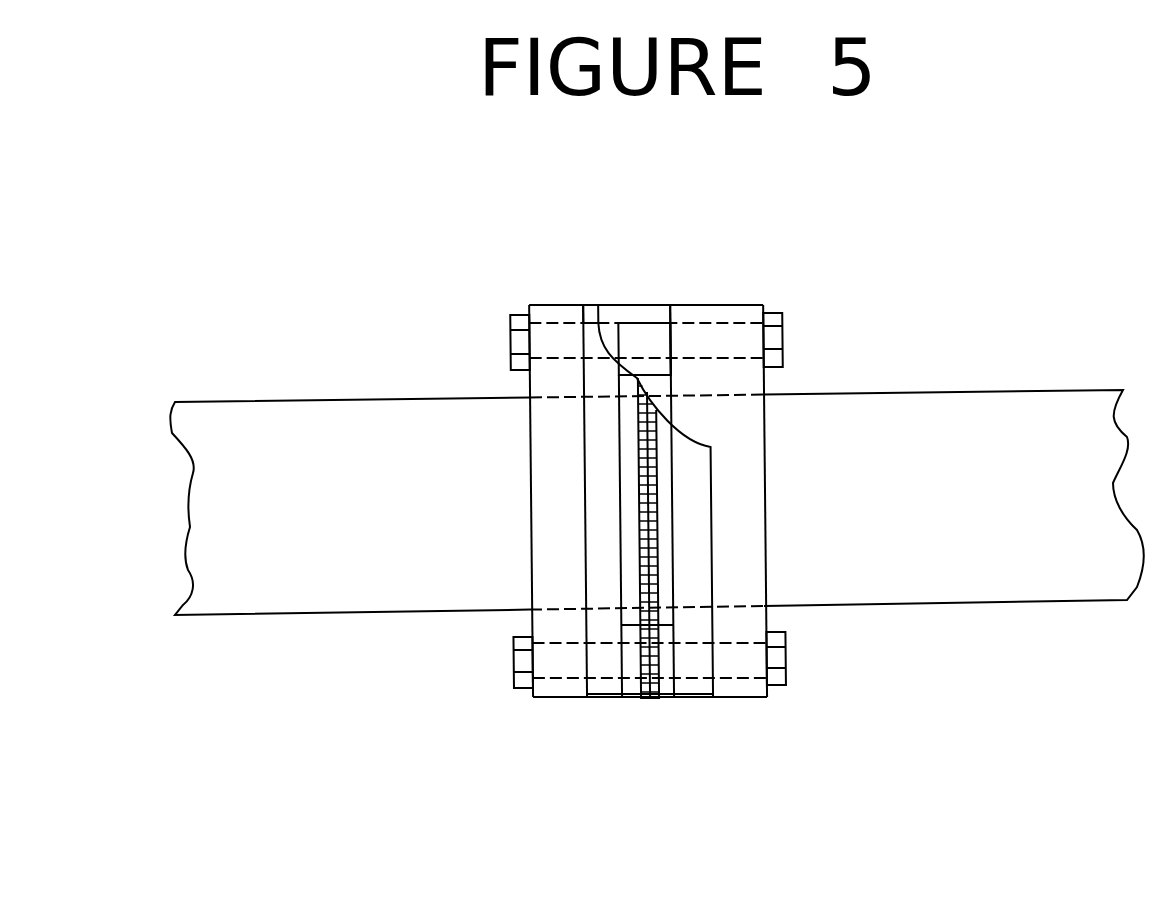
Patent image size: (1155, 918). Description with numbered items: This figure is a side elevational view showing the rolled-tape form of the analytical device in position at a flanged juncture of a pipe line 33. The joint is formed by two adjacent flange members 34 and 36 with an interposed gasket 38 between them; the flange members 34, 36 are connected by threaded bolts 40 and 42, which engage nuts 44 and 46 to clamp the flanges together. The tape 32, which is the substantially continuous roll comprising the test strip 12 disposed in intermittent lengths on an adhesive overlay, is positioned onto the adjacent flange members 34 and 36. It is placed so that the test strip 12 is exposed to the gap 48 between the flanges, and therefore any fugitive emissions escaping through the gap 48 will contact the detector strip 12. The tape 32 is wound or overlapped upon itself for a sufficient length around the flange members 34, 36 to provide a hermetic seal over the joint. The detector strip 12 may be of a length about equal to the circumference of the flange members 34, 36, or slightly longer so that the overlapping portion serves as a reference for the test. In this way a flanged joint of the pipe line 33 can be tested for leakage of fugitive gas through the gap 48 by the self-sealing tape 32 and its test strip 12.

The test strip 12 is at (643, 698).
The roll 32 is at (592, 305).
The pipe line 33 is at (342, 428).
The flange member 34 is at (556, 318).
The flange member 36 is at (748, 312).
The gasket 38 is at (663, 383).
The threaded bolt 40 is at (775, 340).
The threaded bolt 42 is at (777, 653).
The nut 44 is at (513, 360).
The nut 46 is at (525, 643).
The gap 48 is at (659, 313).